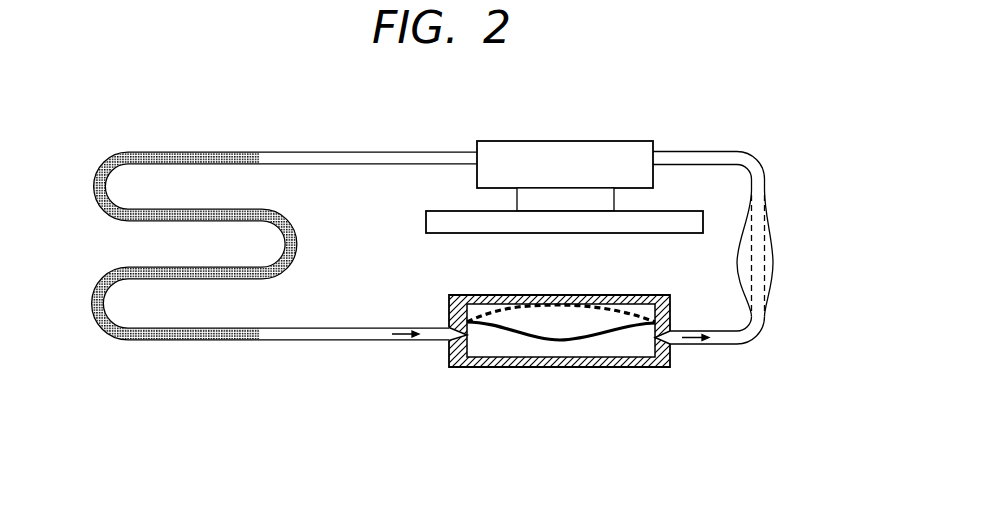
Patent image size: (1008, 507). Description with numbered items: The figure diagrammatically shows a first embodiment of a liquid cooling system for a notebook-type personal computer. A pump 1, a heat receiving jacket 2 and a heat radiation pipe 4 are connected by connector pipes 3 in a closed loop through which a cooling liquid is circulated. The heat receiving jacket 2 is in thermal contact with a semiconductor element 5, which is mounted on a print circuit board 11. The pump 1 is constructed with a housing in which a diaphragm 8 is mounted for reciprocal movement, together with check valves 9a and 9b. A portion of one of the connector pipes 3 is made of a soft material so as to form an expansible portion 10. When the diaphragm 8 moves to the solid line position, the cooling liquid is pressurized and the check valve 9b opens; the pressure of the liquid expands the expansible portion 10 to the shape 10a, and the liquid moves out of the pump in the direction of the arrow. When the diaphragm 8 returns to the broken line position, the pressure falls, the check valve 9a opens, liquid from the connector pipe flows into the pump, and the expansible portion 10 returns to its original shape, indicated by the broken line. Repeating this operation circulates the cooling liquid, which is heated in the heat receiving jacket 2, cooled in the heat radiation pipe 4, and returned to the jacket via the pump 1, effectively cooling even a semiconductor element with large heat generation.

The pump 1 is at (531, 370).
The heat receiving jacket 2 is at (595, 150).
The connector pipe 3 is at (288, 334).
The heat radiation pipe 4 is at (213, 152).
The semiconductor element 5 is at (546, 198).
The diaphragm 8 is at (510, 330).
The check valve 9a is at (447, 335).
The check valve 9b is at (650, 338).
The expansible portion 10 is at (763, 248).
The expanded shape 10a is at (773, 222).
The print circuit board 11 is at (670, 218).